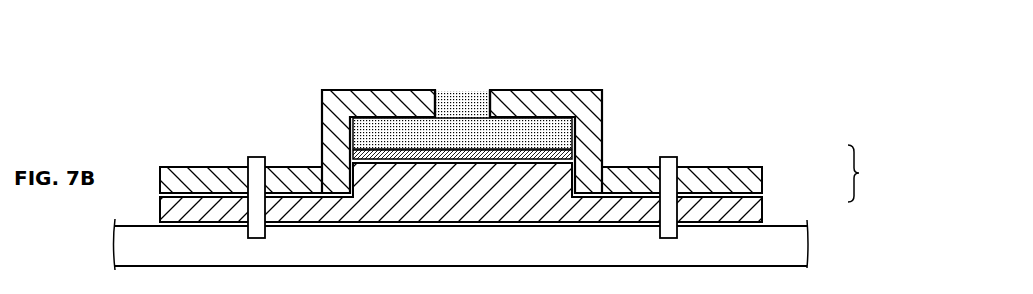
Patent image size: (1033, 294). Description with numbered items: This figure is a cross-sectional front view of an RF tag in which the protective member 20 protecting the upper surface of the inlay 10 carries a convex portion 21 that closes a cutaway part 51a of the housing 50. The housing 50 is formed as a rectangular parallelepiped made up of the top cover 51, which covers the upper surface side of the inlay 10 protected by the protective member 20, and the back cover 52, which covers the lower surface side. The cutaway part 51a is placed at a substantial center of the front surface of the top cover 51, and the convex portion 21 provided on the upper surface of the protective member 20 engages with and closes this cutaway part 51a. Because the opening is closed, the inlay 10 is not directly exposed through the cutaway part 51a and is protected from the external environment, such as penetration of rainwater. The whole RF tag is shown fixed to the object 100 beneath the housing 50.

The object 100 is at (748, 245).
The housing 50 is at (867, 173).
The top cover 51 is at (728, 181).
The back cover 52 is at (728, 211).
The cutaway part 51a is at (451, 97).
The protective member 20 is at (557, 132).
The convex portion 21 is at (463, 101).
The inlay 10 is at (553, 154).